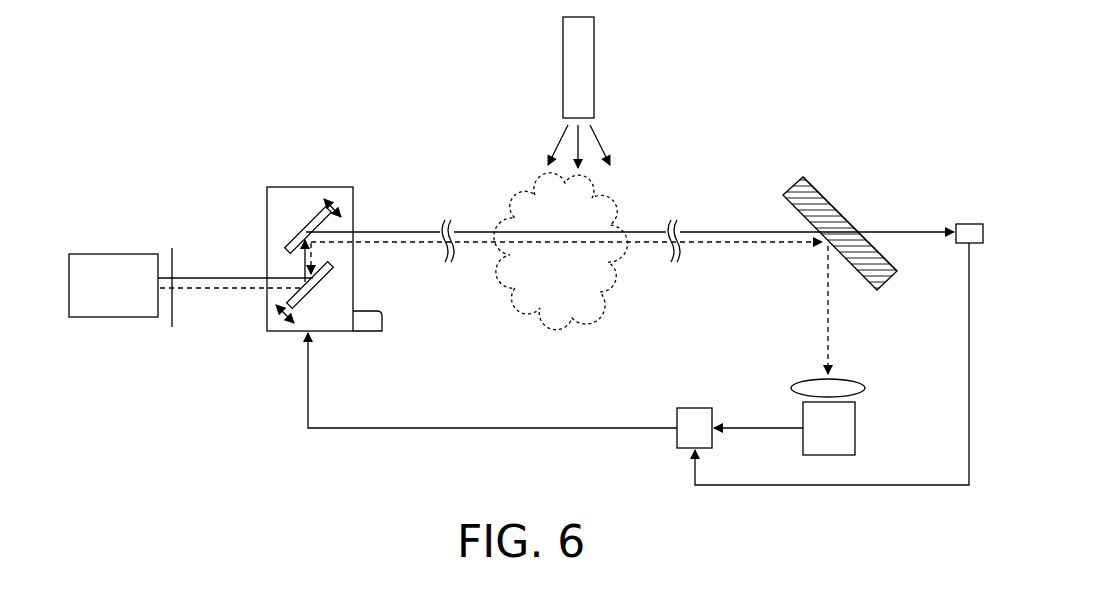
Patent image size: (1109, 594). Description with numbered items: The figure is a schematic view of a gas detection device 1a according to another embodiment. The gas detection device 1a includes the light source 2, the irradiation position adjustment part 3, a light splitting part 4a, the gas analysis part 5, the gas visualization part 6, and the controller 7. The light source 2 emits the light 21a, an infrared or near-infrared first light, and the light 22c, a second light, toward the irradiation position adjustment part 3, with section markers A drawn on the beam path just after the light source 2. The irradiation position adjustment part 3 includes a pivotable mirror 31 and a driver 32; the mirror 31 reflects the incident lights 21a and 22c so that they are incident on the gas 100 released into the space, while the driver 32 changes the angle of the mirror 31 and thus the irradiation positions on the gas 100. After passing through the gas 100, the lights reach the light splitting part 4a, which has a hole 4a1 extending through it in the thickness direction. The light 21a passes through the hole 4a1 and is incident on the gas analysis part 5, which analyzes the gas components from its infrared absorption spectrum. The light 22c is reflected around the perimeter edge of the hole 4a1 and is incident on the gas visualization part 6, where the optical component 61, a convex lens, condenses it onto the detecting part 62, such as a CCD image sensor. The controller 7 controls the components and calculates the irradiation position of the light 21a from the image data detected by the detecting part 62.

The gas detection device 1a is at (230, 158).
The light source 2 is at (107, 322).
The irradiation position adjustment part 3 is at (318, 166).
The mirror 31 is at (305, 224).
The driver 32 is at (368, 316).
The light 21a is at (240, 274).
The light 22c is at (236, 293).
The gas 100 is at (592, 302).
The light splitting part 4a is at (828, 184).
The hole 4a1 is at (858, 220).
The gas analysis part 5 is at (968, 222).
The gas visualization part 6 is at (840, 412).
The optical component 61 is at (862, 386).
The detecting part 62 is at (823, 428).
The controller 7 is at (662, 442).
The section line A is at (178, 255).